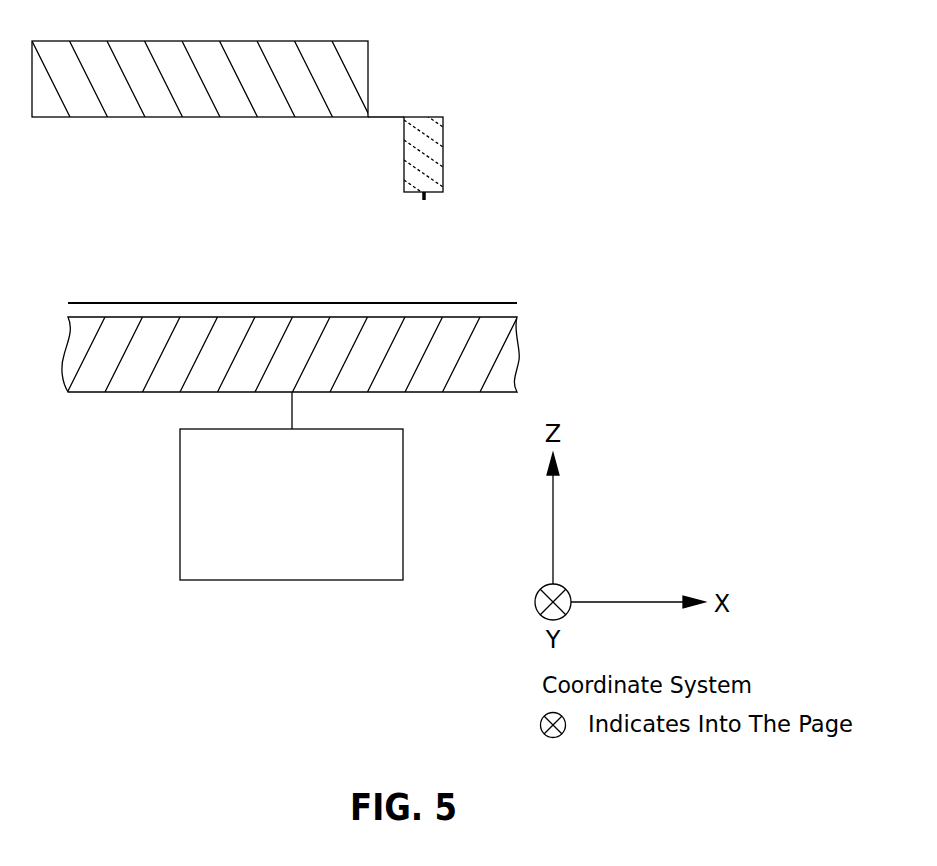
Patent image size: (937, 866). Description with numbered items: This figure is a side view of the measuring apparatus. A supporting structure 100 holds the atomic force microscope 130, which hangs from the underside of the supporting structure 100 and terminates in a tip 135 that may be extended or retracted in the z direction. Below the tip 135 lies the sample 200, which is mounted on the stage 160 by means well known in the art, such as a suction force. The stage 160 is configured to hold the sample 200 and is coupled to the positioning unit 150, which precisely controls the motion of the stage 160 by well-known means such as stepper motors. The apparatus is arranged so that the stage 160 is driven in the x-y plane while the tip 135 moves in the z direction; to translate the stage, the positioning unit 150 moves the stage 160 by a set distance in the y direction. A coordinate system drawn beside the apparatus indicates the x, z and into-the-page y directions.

The supporting structure 100 is at (180, 92).
The atomic force microscope 130 is at (433, 155).
The tip 135 is at (428, 200).
The sample 200 is at (497, 295).
The stage 160 is at (507, 348).
The positioning unit 150 is at (272, 531).